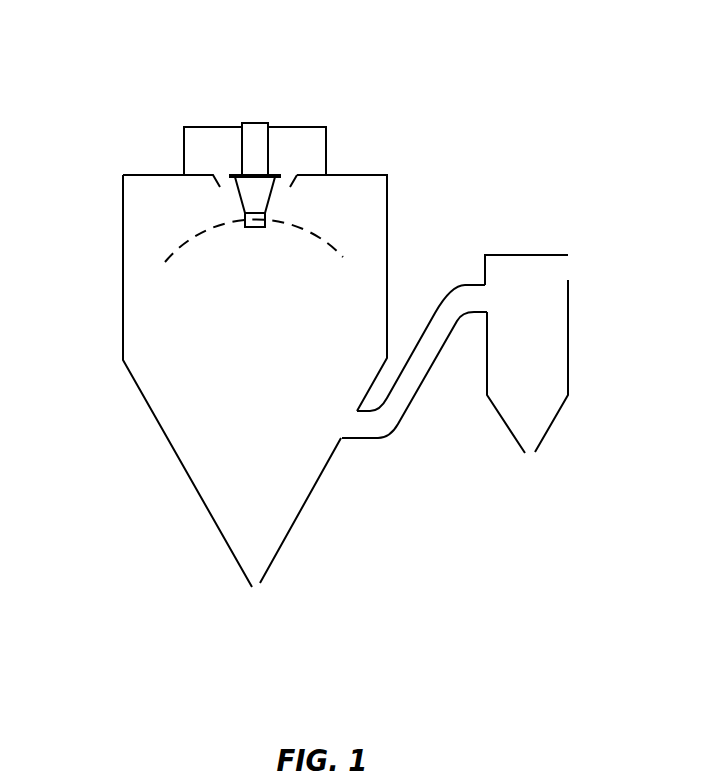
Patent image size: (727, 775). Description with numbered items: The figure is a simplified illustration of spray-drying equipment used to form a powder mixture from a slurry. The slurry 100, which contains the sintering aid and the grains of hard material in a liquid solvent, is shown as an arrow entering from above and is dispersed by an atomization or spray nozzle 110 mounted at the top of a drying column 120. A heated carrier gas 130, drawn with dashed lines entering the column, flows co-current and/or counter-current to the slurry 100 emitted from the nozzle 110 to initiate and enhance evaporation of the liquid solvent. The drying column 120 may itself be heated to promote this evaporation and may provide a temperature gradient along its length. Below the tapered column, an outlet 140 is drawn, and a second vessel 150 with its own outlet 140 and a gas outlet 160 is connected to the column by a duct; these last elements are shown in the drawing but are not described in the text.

The slurry 100 is at (256, 116).
The spray nozzle 110 is at (241, 191).
The drying column 120 is at (387, 240).
The heated carrier gas 130 is at (205, 295).
The dried product outlet 140 is at (257, 590).
The cyclone separator 150 is at (568, 362).
The exhaust gas outlet 160 is at (548, 269).